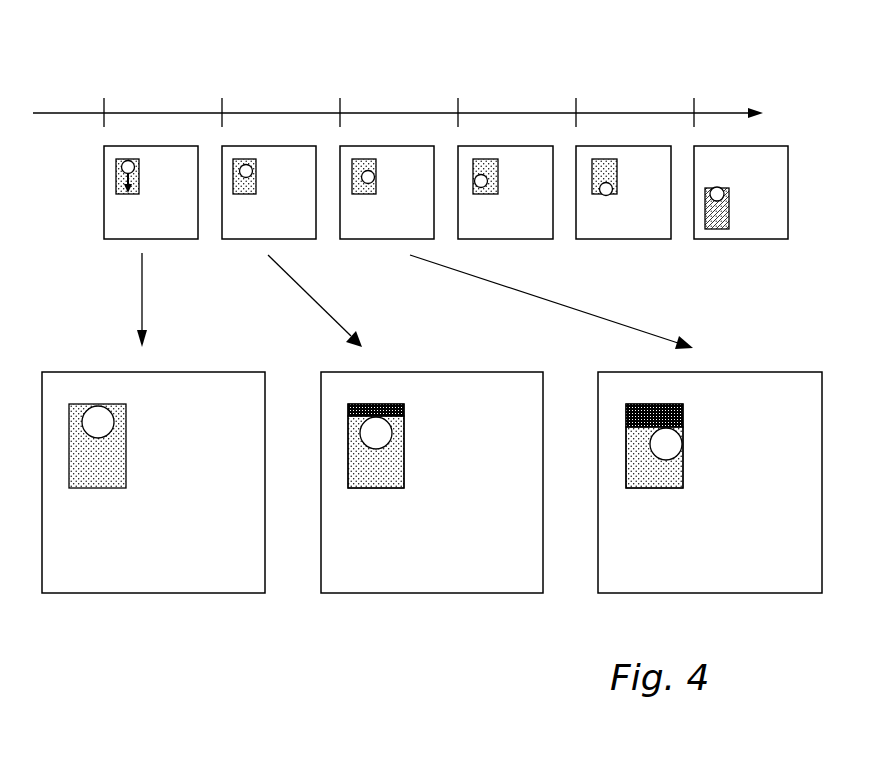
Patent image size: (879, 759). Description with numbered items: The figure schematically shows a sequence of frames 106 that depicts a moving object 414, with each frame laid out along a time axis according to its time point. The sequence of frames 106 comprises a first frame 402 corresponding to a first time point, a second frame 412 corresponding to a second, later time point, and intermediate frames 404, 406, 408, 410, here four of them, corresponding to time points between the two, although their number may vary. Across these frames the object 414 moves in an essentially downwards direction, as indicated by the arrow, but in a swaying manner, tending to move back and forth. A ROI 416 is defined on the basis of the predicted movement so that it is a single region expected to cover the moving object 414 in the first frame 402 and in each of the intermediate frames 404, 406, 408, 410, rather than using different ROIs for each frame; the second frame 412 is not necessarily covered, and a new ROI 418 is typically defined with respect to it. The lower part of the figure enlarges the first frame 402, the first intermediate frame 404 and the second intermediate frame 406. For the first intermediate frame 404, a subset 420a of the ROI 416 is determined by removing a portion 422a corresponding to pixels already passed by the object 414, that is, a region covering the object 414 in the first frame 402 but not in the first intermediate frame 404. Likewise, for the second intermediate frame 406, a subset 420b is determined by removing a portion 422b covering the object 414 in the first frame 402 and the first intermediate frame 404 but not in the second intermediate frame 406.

The sequence of frames 106 is at (623, 60).
The first frame 402 is at (102, 166).
The first intermediate frame 404 is at (220, 166).
The second intermediate frame 406 is at (338, 166).
The intermediate frame 408 is at (456, 166).
The intermediate frame 410 is at (574, 166).
The second frame 412 is at (692, 166).
The moving object 414 is at (134, 168).
The ROI 416 is at (139, 190).
The new ROI 418 is at (729, 205).
The subset of the ROI 420a is at (363, 478).
The subset of the ROI 420b is at (640, 478).
The removed portion 422a is at (404, 408).
The removed portion 422b is at (683, 410).